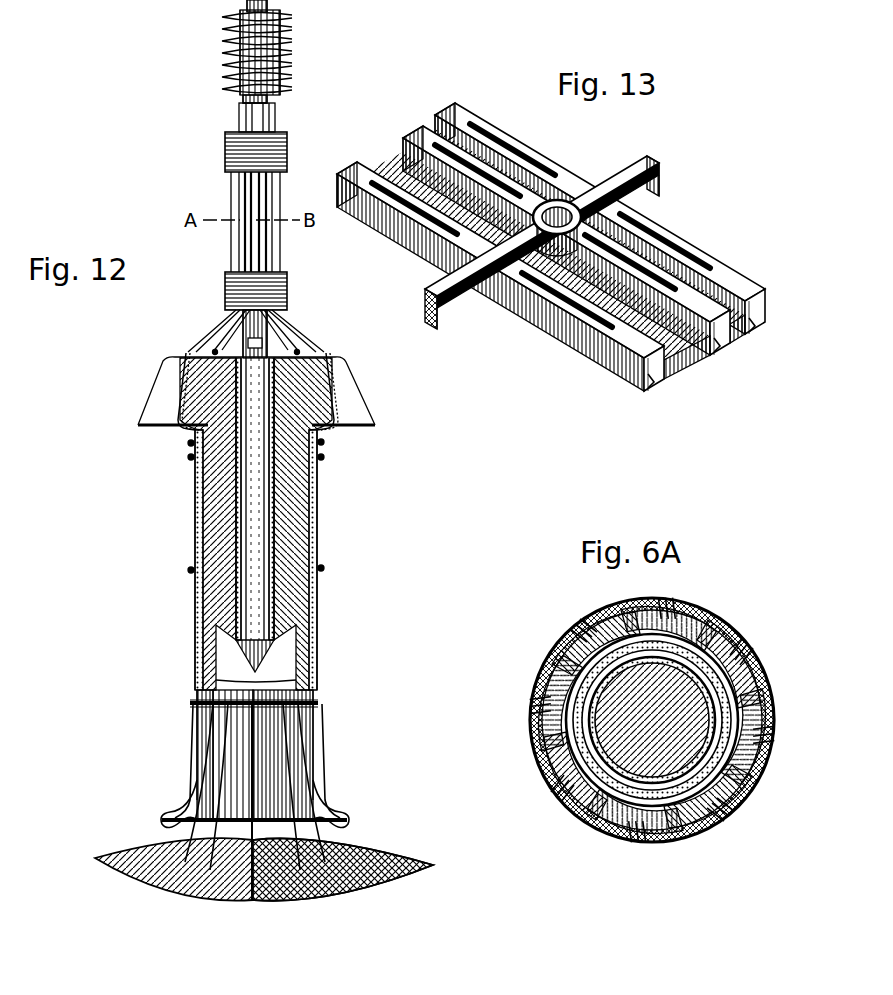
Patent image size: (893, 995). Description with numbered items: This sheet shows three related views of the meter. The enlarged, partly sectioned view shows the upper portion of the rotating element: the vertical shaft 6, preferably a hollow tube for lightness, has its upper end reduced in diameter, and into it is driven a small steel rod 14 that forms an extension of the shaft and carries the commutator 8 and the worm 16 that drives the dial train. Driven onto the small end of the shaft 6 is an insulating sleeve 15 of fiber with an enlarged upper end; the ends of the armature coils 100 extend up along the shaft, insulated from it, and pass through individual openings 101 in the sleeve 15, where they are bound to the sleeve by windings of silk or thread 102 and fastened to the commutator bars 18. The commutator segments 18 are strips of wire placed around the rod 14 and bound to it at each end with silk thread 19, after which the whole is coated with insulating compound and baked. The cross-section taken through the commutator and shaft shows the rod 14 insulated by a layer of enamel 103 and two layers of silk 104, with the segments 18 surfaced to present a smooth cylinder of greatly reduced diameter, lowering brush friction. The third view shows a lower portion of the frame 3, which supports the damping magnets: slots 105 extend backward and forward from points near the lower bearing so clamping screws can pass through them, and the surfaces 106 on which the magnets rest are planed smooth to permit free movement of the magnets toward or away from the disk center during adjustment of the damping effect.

In FIG. 13, the frame 3 is at (655, 160).
In FIG. 12, the shaft 6 is at (297, 563).
In FIG. 12, the commutator 8 is at (268, 197).
In FIG. 12, the steel rod 14 is at (254, 492).
In FIG. 12, the insulating sleeve 15 is at (297, 523).
In FIG. 12, the worm 16 is at (292, 40).
In FIG. 6A, the worm 16 is at (538, 682).
In FIG. 12, the commutator bars 18 is at (300, 338).
In FIG. 6A, the commutator bars 18 is at (657, 826).
In FIG. 12, the silk thread 19 is at (293, 148).
In FIG. 6A, the silk thread 19 is at (710, 616).
In FIG. 12, the armature coil ends 100 is at (322, 722).
In FIG. 12, the openings 101 is at (345, 389).
In FIG. 12, the windings of silk or thread 102 is at (324, 458).
In FIG. 6A, the layer of enamel 103 is at (713, 797).
In FIG. 6A, the layers of silk 104 is at (722, 728).
In FIG. 13, the slots 105 is at (740, 312).
In FIG. 13, the magnet-resting surfaces 106 is at (612, 323).